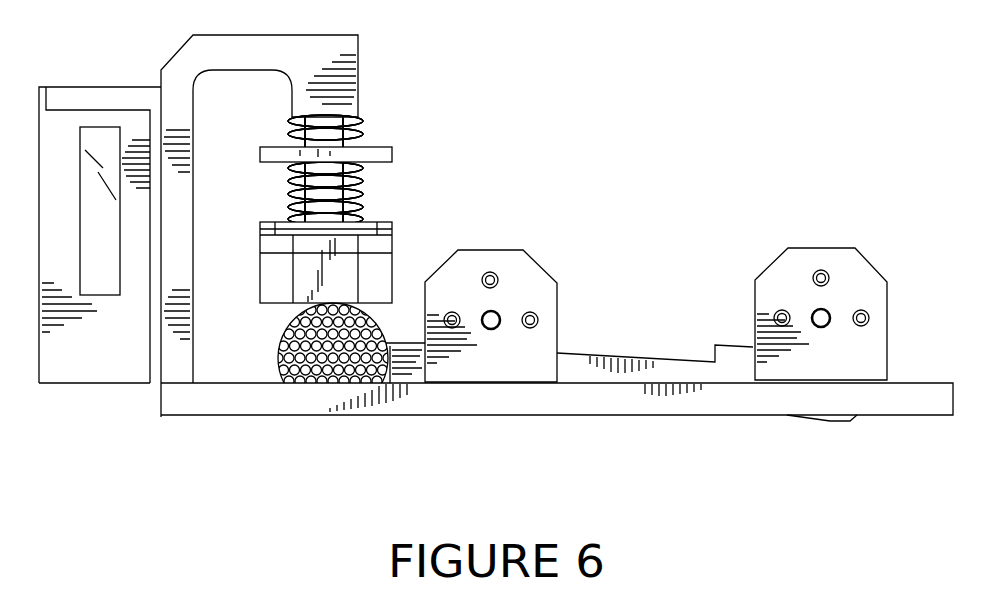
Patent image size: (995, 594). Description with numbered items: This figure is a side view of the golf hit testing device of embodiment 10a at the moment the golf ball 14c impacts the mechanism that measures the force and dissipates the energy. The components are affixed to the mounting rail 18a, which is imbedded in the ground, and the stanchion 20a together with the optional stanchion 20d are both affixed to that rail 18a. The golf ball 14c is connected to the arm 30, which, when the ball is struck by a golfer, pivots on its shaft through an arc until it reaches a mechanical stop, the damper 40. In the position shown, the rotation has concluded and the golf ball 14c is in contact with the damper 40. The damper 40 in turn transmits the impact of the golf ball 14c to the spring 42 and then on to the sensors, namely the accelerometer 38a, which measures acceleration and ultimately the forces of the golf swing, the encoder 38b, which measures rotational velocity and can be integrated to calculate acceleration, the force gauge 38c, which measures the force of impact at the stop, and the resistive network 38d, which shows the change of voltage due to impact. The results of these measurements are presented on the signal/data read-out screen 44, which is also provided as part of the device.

The golf hit testing device embodiment 10a is at (726, 108).
The golf ball 14c is at (293, 363).
The mounting rail 18a is at (730, 402).
The stanchion 20a is at (842, 268).
The optional stanchion 20d is at (521, 277).
The arm 30 is at (583, 367).
The accelerometer 38a is at (377, 225).
The encoder 38b is at (380, 150).
The force gauge 38c is at (405, 150).
The resistive network 38d is at (429, 150).
The damper 40 is at (393, 270).
The spring 42 is at (288, 195).
The signal/data read-out screen 44 is at (100, 137).